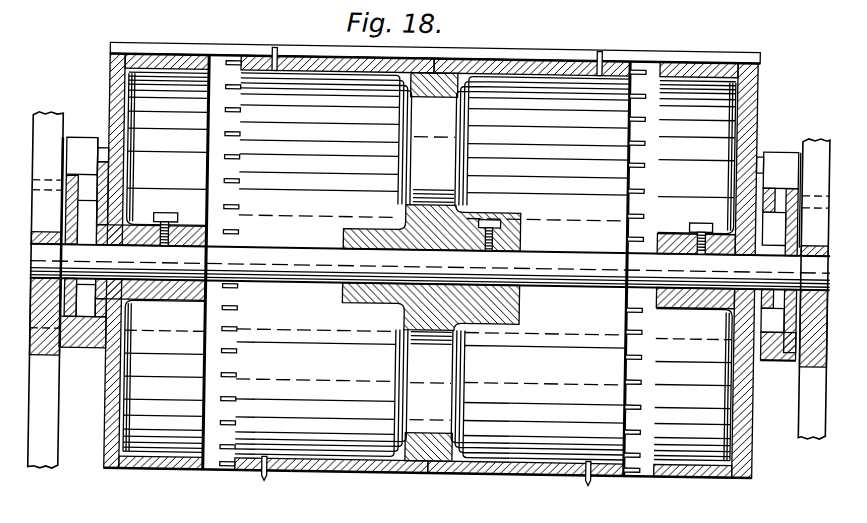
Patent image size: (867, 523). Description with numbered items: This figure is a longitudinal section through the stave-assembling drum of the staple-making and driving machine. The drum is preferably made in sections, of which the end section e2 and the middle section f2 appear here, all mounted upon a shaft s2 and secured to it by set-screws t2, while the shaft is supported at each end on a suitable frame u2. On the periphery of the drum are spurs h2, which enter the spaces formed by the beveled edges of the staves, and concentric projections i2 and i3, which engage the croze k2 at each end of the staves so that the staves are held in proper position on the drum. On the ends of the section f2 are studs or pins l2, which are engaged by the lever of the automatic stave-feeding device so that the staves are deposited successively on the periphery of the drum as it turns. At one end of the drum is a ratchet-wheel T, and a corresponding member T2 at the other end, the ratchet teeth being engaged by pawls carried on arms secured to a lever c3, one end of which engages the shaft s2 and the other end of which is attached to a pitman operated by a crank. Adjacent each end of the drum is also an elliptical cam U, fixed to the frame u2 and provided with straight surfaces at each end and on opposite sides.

The concentric projections i2 is at (120, 61).
The casing half i3 is at (757, 61).
The croze k2 is at (127, 58).
The spurs h2 is at (272, 52).
The studs or pins l2 is at (229, 331).
The drum section e2 is at (166, 262).
The drum section f2 is at (432, 267).
The shaft s2 is at (556, 257).
The set-screws t2 is at (433, 223).
The frame u2 is at (42, 406).
The elliptical cam U is at (430, 249).
The lever c3 is at (431, 227).
The ratchet-wheel T is at (104, 152).
The bracket T2 is at (759, 152).